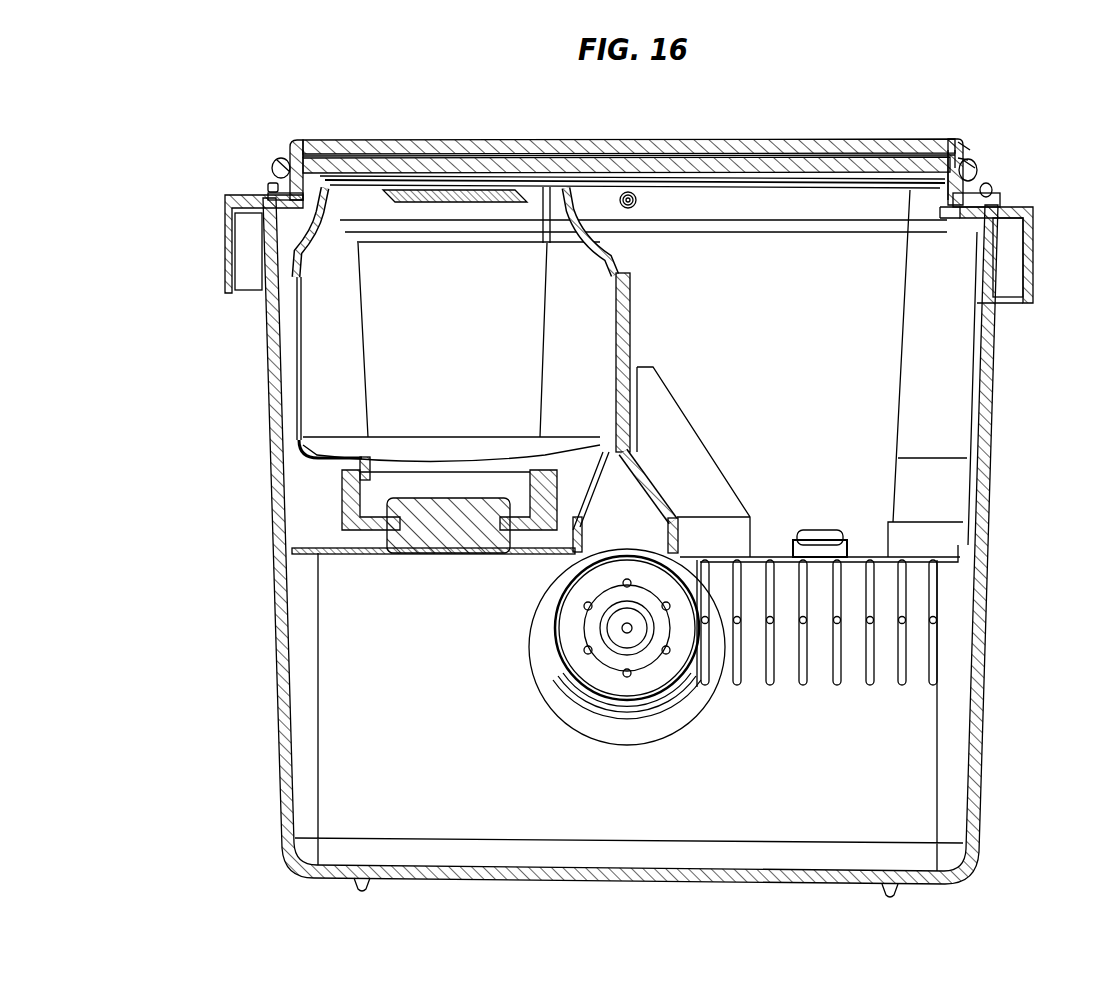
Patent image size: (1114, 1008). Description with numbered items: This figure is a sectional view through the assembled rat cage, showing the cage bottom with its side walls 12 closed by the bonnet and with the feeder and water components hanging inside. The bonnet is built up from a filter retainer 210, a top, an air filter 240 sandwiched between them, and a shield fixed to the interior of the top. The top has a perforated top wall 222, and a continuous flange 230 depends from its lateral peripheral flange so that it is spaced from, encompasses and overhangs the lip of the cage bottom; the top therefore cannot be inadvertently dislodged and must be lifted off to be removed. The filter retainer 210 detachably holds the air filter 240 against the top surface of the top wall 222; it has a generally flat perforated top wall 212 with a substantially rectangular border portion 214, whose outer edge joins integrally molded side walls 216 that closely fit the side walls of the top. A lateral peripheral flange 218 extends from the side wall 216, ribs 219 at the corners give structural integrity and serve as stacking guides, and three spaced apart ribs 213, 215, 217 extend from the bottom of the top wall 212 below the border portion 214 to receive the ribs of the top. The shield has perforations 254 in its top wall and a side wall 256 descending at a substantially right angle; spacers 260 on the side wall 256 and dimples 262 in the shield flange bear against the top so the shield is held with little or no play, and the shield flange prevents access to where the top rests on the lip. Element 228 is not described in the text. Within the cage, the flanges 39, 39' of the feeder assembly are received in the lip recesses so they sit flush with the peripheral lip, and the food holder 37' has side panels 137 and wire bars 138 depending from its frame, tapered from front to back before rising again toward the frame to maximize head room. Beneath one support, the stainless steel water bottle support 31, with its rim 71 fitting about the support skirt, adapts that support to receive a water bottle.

The side walls 12 is at (270, 546).
The water bottle support 31 is at (540, 554).
The food holder 37' is at (636, 530).
The flange 39 is at (223, 251).
The flange 39' is at (1015, 289).
The rim 71 is at (665, 522).
The side panels 137 is at (690, 687).
The wire bars 138 is at (770, 687).
The filter retainer 210 is at (858, 88).
The top wall 212 is at (715, 140).
The rib 213 is at (960, 153).
The border portion 214 is at (947, 148).
The rib 215 is at (945, 155).
The side walls 216 is at (277, 162).
The rib 217 is at (937, 152).
The lateral peripheral flange 218 is at (268, 188).
The ribs 219 is at (273, 160).
The top wall 222 is at (802, 158).
The flange 228 is at (268, 197).
The flange 230 is at (228, 232).
The air filter 240 is at (657, 142).
The perforations 254 is at (717, 180).
The side wall 256 is at (778, 214).
The spacers 260 is at (327, 238).
The dimples 262 is at (293, 233).